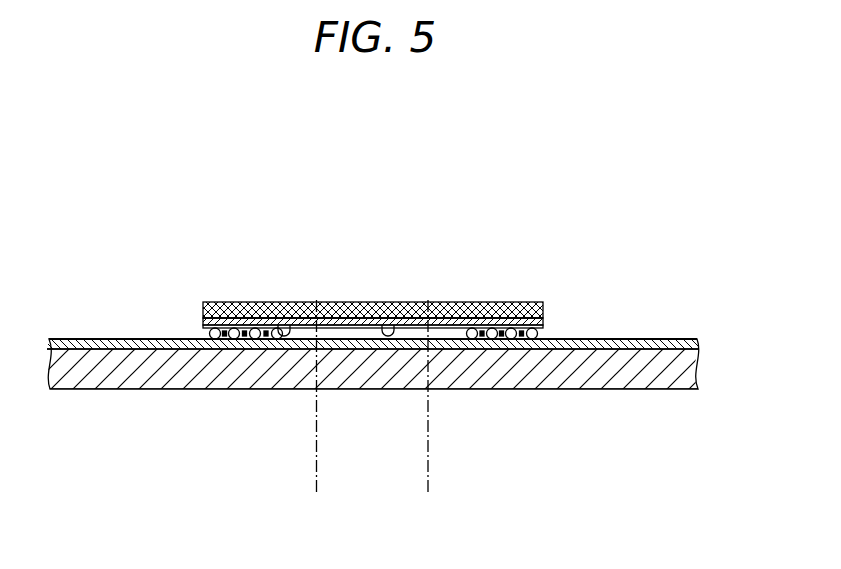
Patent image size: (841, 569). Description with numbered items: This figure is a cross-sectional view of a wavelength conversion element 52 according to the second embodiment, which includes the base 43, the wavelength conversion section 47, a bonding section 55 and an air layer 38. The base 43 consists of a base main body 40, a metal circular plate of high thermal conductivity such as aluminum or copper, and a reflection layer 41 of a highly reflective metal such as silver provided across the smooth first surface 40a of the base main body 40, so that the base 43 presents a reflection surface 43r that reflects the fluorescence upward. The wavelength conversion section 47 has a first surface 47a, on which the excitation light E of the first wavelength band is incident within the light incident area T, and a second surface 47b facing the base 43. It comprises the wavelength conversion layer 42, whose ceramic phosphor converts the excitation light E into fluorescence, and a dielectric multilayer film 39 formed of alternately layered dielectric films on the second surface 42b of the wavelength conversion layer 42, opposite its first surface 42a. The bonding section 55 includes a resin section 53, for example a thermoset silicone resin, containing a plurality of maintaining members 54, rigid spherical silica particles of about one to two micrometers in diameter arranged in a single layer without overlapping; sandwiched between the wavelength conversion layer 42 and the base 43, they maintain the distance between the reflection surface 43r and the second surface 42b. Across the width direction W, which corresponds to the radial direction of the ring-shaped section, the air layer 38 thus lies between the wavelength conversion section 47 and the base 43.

The wavelength conversion element 52 is at (563, 171).
The base 43 is at (372, 420).
The base main body 40 is at (104, 346).
The reflection layer 41 is at (136, 362).
The reflection surface 43r is at (103, 338).
The first surface of base main body 40a is at (658, 339).
The wavelength conversion section 47 is at (376, 255).
The dielectric multilayer film 39 is at (530, 310).
The wavelength conversion layer 42 is at (550, 233).
The first surface of wavelength conversion layer 42a is at (373, 245).
The second surface of wavelength conversion layer 42b is at (276, 325).
The first surface of wavelength conversion section 47a is at (413, 302).
The second surface of wavelength conversion section 47b is at (388, 330).
The air layer 38 is at (342, 325).
The resin section 53 is at (221, 339).
The maintaining members 54 is at (251, 339).
The bonding section 55 is at (380, 418).
The excitation light E is at (314, 300).
The light incident area T is at (317, 486).
The width direction W is at (412, 546).